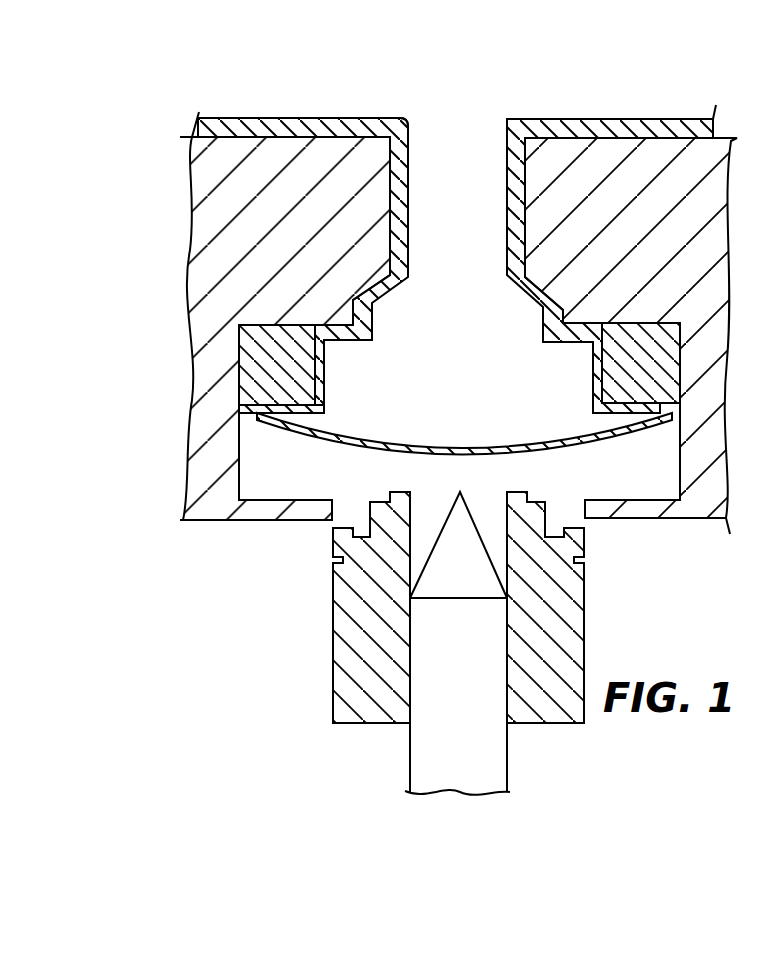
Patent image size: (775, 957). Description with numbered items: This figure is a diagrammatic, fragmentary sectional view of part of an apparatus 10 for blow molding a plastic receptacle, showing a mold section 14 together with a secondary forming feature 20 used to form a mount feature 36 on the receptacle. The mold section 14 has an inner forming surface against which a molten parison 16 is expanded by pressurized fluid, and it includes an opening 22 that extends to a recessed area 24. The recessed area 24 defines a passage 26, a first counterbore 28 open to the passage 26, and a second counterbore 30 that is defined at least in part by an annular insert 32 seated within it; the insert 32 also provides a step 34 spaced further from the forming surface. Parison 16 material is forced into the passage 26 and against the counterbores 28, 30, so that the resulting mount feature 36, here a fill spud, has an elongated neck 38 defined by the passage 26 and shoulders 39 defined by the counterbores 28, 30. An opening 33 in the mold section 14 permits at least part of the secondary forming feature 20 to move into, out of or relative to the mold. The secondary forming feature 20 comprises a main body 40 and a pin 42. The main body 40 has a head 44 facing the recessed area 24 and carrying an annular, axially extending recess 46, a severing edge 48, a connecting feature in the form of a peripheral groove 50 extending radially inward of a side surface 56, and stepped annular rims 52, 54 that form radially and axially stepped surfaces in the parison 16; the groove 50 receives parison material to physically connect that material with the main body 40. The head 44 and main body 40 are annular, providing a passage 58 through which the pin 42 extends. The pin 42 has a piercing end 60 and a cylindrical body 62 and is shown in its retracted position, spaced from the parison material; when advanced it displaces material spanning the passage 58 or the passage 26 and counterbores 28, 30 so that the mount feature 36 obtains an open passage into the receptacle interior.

The apparatus 10 is at (205, 88).
The mold section 14 is at (200, 228).
The parison 16 is at (632, 112).
The secondary forming feature 20 is at (295, 715).
The opening 22 is at (409, 125).
The recessed area 24 is at (468, 130).
The passage 26 is at (410, 225).
The first counterbore 28 is at (368, 312).
The second counterbore 30 is at (318, 360).
The insert 32 is at (262, 370).
The opening 33 is at (570, 517).
The step 34 is at (238, 450).
The mount feature 36 is at (535, 350).
The elongated neck 38 is at (410, 172).
The shoulders 39 is at (530, 290).
The main body 40 is at (583, 630).
The pin 42 is at (495, 770).
The head 44 is at (557, 487).
The recess 46 is at (358, 535).
The severing edge 48 is at (333, 508).
The peripheral groove 50 is at (335, 560).
The stepped annular rim 52 is at (368, 535).
The stepped annular rim 54 is at (387, 492).
The side surface 56 is at (333, 660).
The passage 58 is at (497, 515).
The piercing end 60 is at (460, 490).
The cylindrical body 62 is at (410, 763).